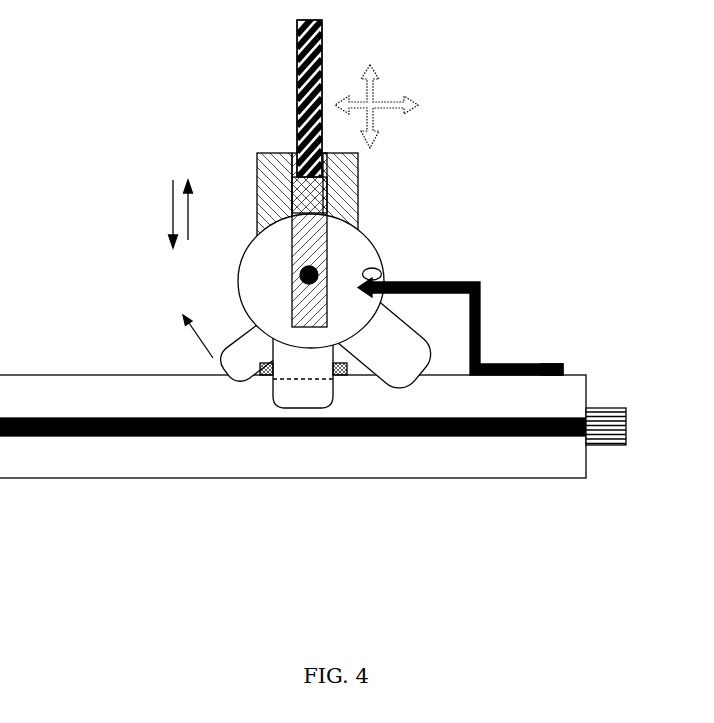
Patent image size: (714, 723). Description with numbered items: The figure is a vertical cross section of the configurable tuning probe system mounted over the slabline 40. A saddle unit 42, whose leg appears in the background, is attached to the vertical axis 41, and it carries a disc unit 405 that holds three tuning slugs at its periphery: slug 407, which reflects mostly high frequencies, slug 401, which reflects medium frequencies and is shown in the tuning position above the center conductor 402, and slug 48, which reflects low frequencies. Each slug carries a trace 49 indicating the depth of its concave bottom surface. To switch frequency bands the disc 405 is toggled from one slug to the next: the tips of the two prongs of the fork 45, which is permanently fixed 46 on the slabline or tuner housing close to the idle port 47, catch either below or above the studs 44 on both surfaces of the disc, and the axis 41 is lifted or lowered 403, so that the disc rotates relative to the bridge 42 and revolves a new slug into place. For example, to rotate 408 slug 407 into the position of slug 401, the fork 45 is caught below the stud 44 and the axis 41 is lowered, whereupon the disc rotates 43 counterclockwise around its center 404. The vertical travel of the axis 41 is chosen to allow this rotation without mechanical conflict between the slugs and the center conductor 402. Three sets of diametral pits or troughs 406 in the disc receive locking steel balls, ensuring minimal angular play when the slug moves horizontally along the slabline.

The slabline 40 is at (72, 373).
The vertical axis 41 is at (297, 98).
The saddle unit 42 is at (328, 206).
The rotation of the disc 43 is at (377, 254).
The stud 44 is at (383, 273).
The fork 45 is at (483, 315).
The fixed mounting of the fork 46 is at (565, 375).
The idle port 47 is at (608, 405).
The low-frequency tuning slug 48 is at (433, 357).
The trace 49 is at (346, 376).
The medium-frequency tuning slug 401 is at (273, 401).
The center conductor 402 is at (160, 437).
The lift or lower movement of the axis 403 is at (180, 212).
The disc center 404 is at (272, 215).
The disc unit 405 is at (312, 238).
The diametral pits (troughs) 406 is at (298, 269).
The high-frequency tuning slug 407 is at (232, 338).
The rotation of slug into position 408 is at (190, 333).